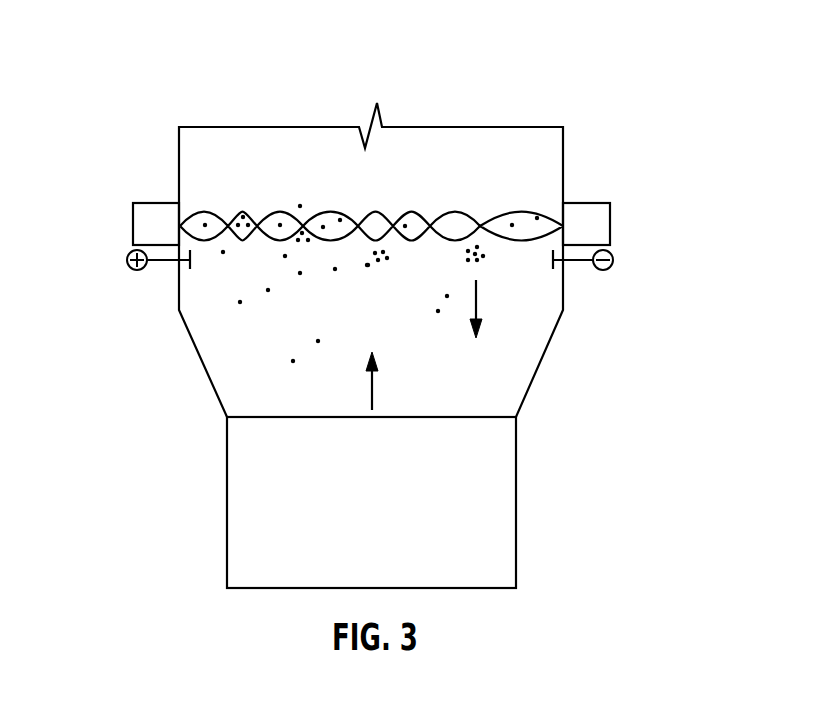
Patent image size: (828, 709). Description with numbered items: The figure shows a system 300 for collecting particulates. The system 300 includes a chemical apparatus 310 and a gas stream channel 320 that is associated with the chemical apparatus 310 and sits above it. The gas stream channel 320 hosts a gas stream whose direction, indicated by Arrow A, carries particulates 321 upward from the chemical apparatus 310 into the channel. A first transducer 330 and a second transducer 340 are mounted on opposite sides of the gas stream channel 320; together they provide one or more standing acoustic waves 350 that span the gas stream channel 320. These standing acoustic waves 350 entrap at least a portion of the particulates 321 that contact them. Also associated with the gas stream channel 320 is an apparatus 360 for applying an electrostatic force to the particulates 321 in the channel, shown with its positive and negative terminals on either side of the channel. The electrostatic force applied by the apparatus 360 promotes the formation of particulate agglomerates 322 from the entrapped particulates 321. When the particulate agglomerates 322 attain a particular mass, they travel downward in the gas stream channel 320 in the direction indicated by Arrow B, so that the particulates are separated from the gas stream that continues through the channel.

The system 300 is at (150, 46).
The chemical apparatus 310 is at (502, 505).
The gas stream channel 320 is at (179, 283).
The particulates 321 is at (293, 361).
The particulate agglomerates 322 is at (487, 260).
The first transducer 330 is at (133, 223).
The second transducer 340 is at (597, 222).
The standing acoustic waves 350 is at (450, 212).
The apparatus for applying an electrostatic force 360 is at (130, 266).
The arrow A is at (372, 380).
The arrow B is at (476, 293).